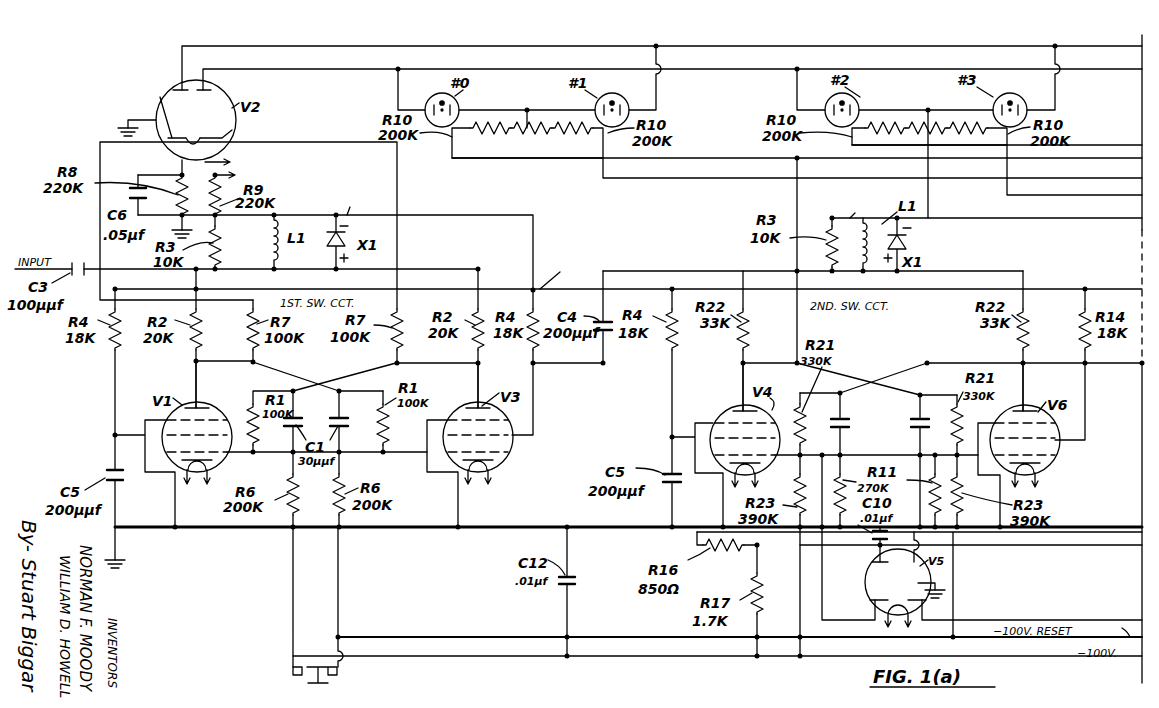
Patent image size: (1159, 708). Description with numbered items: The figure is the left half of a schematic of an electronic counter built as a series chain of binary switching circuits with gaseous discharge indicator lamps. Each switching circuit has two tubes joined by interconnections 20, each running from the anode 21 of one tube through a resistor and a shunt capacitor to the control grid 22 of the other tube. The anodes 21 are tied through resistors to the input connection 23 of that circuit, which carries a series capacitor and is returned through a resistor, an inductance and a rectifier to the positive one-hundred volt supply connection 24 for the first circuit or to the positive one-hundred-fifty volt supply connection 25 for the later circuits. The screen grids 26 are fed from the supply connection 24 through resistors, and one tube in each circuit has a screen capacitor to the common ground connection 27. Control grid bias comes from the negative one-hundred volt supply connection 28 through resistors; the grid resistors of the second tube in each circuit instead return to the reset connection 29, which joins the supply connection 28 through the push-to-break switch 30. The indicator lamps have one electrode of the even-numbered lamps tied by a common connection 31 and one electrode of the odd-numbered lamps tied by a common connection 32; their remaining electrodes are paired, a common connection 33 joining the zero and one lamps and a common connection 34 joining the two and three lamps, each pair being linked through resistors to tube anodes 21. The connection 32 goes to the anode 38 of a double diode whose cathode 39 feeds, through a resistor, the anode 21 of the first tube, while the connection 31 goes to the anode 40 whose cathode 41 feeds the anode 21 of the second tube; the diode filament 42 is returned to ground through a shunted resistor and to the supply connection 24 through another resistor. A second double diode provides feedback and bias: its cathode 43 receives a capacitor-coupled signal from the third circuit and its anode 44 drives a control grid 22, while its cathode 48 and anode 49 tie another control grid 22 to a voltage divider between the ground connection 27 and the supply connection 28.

The interconnection 20 is at (342, 375).
The anode 21 is at (200, 406).
The control grid 22 is at (218, 460).
The input connection 23 is at (90, 262).
The +100 volt supply connection 24 is at (483, 217).
The +150 volt supply connection 25 is at (968, 212).
The screen grid 26 is at (168, 437).
The common ground connection 27 is at (480, 531).
The -100 volt supply connection 28 is at (684, 658).
The -100 volt reset connection 29 is at (463, 633).
The push-to-break switch 30 is at (296, 672).
The common connection 31 is at (287, 70).
The common connection 32 is at (290, 45).
The common connection 33 is at (494, 110).
The common connection 34 is at (887, 106).
The anode 38 is at (178, 88).
The cathode 39 is at (165, 100).
The anode 40 is at (212, 90).
The cathode 41 is at (232, 128).
The filament 42 is at (181, 152).
The cathode 43 is at (928, 601).
The anode 44 is at (940, 582).
The cathode 48 is at (872, 600).
The anode 49 is at (872, 562).